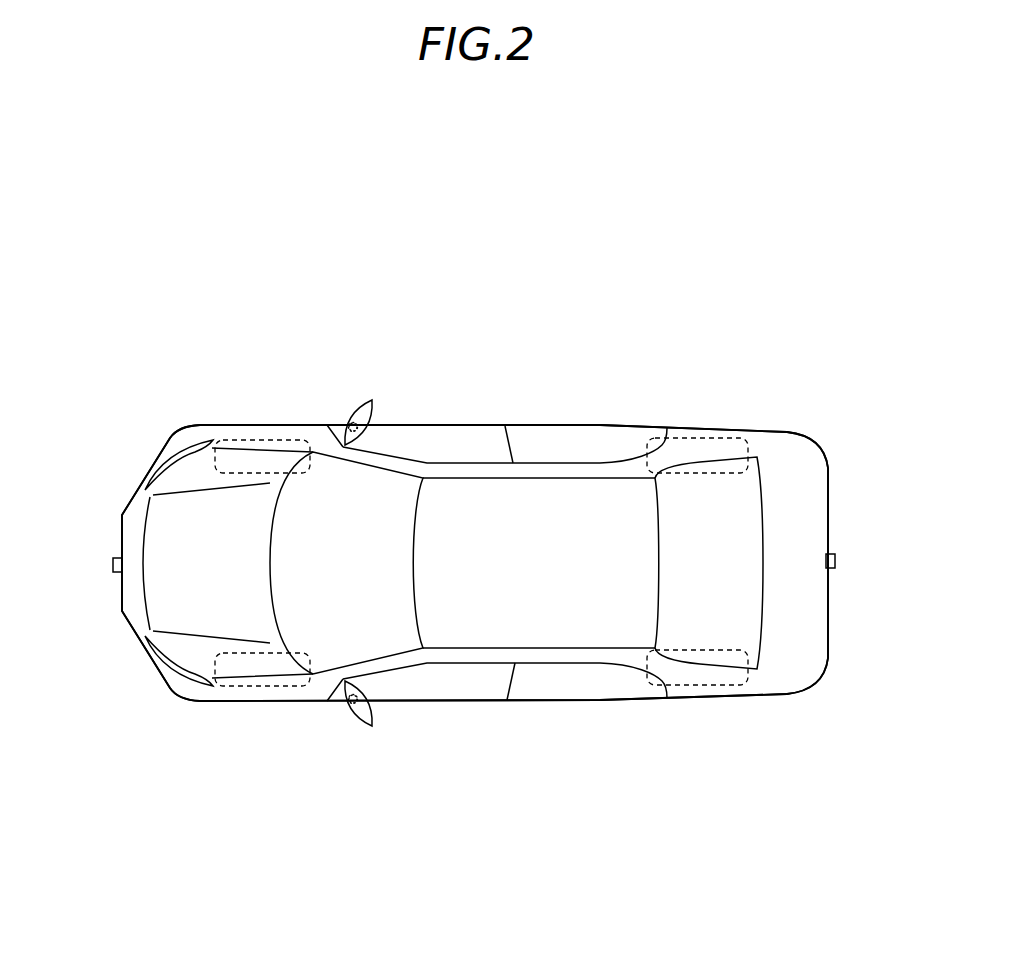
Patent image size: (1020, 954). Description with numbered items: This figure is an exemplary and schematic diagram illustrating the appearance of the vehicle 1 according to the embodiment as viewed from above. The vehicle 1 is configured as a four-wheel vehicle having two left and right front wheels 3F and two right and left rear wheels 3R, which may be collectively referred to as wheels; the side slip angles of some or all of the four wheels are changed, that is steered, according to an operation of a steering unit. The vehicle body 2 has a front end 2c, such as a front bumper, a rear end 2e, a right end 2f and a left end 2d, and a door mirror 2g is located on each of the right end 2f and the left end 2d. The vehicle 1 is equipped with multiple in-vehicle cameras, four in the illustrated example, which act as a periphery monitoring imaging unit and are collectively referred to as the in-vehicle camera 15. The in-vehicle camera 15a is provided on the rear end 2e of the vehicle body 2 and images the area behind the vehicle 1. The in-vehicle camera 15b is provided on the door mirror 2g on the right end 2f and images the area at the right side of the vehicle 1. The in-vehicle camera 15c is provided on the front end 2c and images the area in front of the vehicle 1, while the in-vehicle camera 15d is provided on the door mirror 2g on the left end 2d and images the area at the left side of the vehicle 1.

The vehicle 1 is at (648, 338).
The vehicle body 2 is at (771, 425).
The front end 2c is at (122, 605).
The left end 2d is at (583, 700).
The rear end 2e is at (830, 583).
The right end 2f is at (596, 425).
The door mirror 2g is at (374, 404).
The front wheels 3F is at (261, 440).
The rear wheels 3R is at (697, 425).
The in-vehicle camera 15 is at (473, 574).
The in-vehicle camera 15a is at (113, 564).
The in-vehicle camera 15b is at (835, 562).
The in-vehicle camera 15c is at (353, 712).
The in-vehicle camera 15d is at (353, 423).